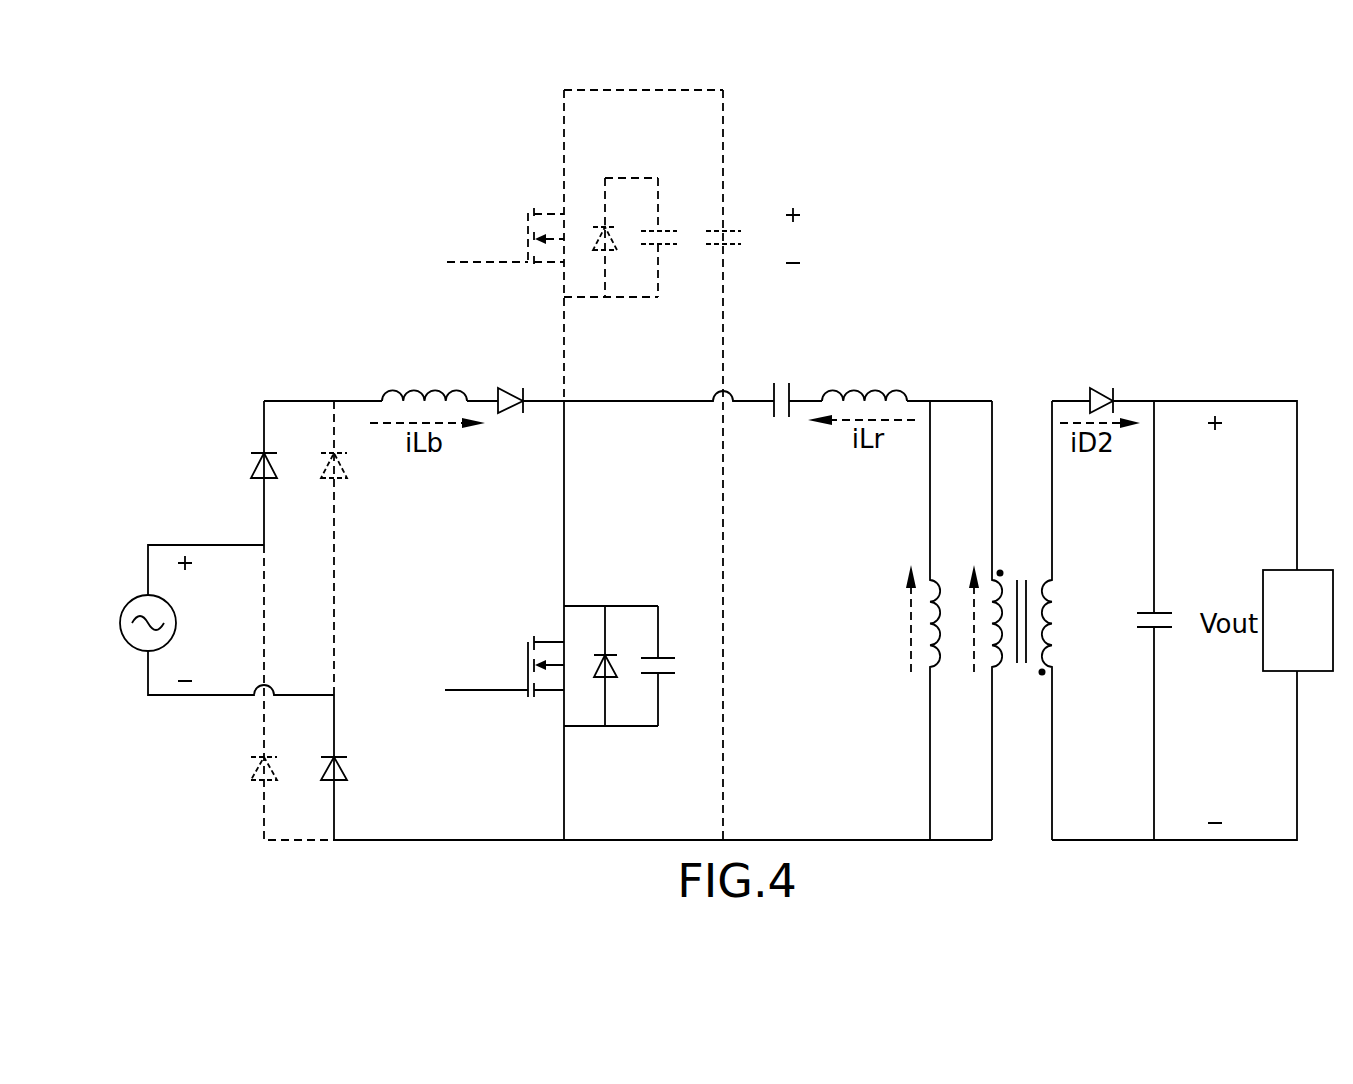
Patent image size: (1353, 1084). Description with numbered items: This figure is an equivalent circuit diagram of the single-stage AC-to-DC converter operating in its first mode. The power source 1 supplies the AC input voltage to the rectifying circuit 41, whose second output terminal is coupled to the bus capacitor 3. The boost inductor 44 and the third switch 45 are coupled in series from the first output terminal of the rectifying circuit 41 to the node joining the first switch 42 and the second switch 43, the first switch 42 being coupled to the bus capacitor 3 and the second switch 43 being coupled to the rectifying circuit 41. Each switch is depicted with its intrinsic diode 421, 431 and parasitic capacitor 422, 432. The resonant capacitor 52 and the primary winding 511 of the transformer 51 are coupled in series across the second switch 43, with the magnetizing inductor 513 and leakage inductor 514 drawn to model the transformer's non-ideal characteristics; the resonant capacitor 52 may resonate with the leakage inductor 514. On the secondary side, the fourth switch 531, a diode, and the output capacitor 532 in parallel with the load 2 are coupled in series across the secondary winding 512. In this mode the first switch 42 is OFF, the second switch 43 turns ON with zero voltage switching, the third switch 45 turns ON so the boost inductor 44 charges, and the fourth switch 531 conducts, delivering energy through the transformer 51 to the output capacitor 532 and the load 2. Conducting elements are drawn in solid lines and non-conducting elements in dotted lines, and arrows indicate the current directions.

The power source 1 is at (120, 623).
The load 2 is at (1325, 570).
The bus capacitor 3 is at (732, 227).
The rectifying circuit 41 is at (293, 375).
The first switch 42 is at (527, 227).
The intrinsic diode 421 is at (592, 227).
The parasitic capacitor 422 is at (670, 227).
The second switch 43 is at (528, 655).
The intrinsic diode 431 is at (594, 668).
The parasitic capacitor 432 is at (672, 650).
The boost inductor 44 is at (388, 388).
The third switch 45 is at (514, 390).
The transformer 51 is at (952, 652).
The primary winding 511 is at (997, 664).
The secondary winding 512 is at (1045, 580).
The magnetizing inductor 513 is at (940, 580).
The leakage inductor 514 is at (876, 388).
The resonant capacitor 52 is at (790, 388).
The fourth switch 531 is at (1105, 388).
The output capacitor 532 is at (1140, 628).